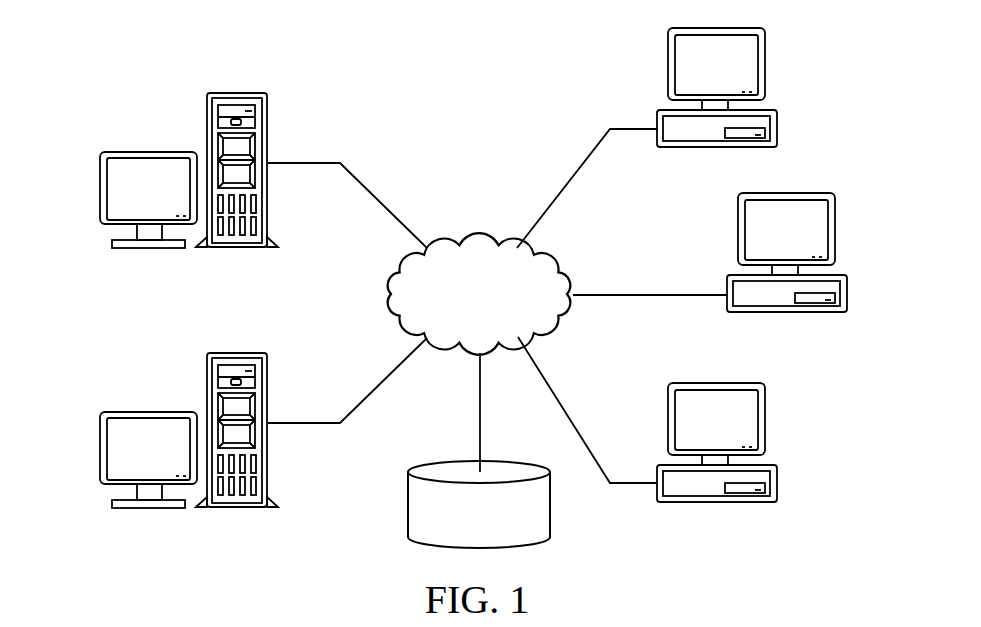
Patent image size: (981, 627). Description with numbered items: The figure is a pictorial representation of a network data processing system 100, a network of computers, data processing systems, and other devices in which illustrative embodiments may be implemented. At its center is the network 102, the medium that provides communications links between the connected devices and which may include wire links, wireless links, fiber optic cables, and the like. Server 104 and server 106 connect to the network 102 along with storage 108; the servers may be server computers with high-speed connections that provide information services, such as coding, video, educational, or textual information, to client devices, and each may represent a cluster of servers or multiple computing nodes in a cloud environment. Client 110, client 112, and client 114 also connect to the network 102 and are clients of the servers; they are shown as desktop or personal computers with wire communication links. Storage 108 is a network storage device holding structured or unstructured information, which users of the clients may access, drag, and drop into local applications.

The network data processing system 100 is at (343, 72).
The network 102 is at (452, 240).
The server 104 is at (100, 187).
The server 106 is at (100, 447).
The storage 108 is at (408, 507).
The client 110 is at (777, 119).
The client 112 is at (847, 303).
The client 114 is at (775, 493).